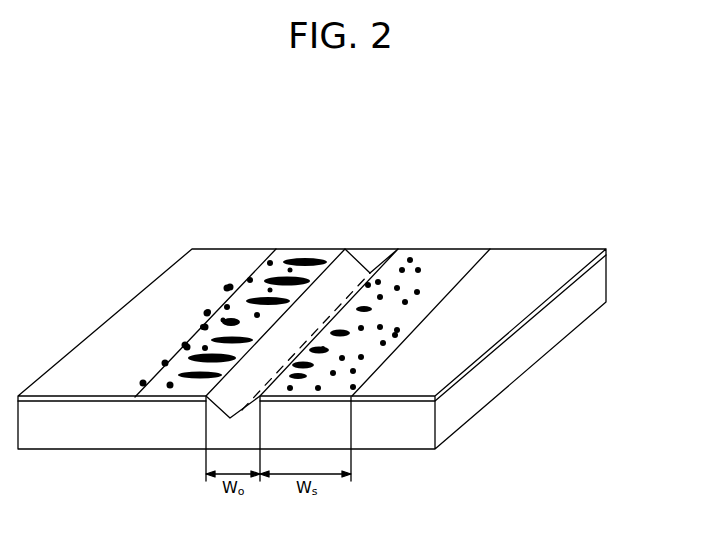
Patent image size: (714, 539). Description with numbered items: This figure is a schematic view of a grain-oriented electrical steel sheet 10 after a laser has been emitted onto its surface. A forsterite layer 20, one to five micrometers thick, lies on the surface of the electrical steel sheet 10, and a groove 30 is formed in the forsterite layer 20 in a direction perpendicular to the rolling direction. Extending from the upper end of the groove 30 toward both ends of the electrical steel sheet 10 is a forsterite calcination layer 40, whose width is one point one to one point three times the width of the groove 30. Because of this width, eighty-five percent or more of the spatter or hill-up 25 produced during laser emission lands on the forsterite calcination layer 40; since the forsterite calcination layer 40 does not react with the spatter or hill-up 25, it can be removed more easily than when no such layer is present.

The grain-oriented electrical steel sheet 10 is at (553, 341).
The forsterite layer 20 is at (606, 250).
The spatter or hill-up 25 is at (380, 313).
The groove 30 is at (218, 412).
The forsterite calcination layer 40 is at (390, 322).